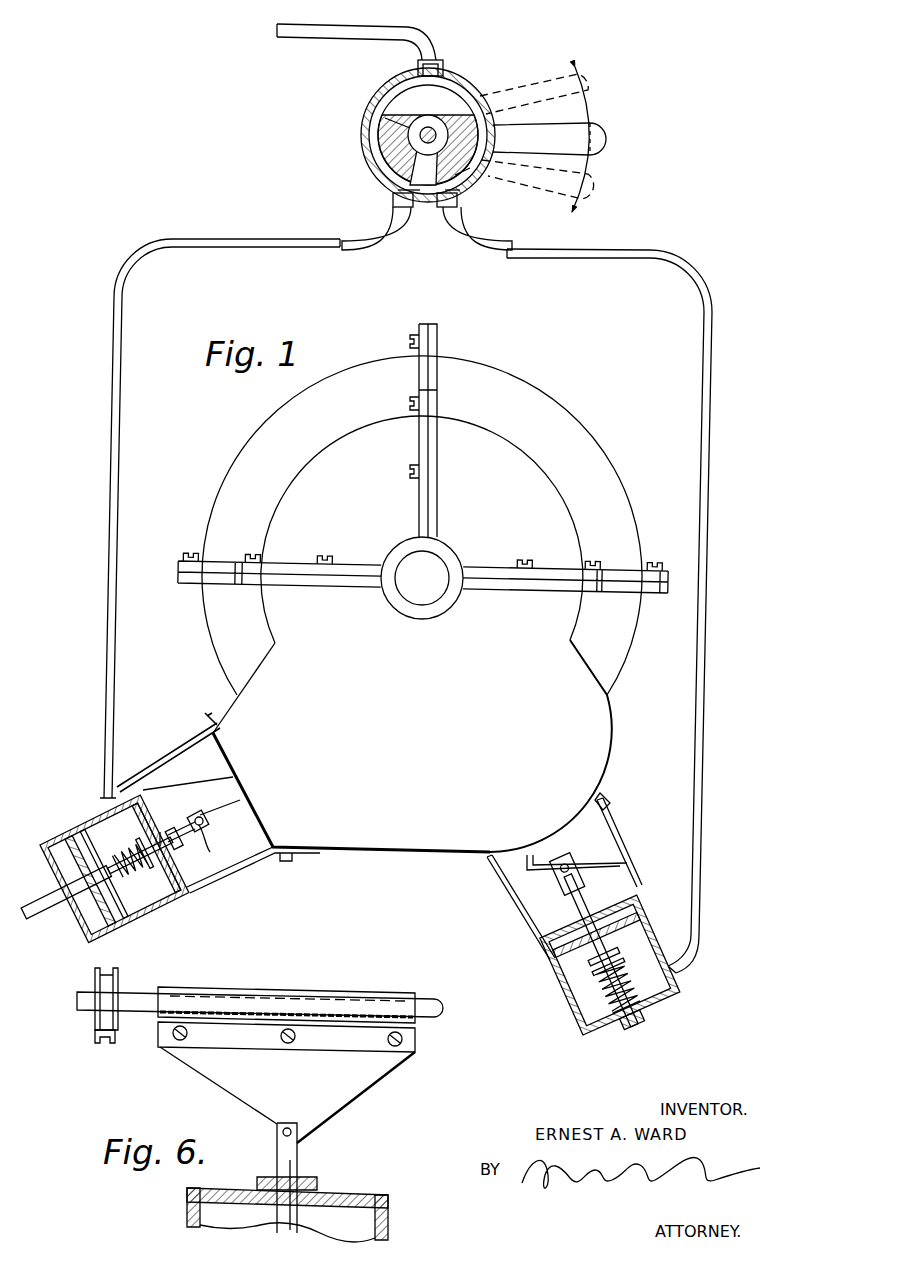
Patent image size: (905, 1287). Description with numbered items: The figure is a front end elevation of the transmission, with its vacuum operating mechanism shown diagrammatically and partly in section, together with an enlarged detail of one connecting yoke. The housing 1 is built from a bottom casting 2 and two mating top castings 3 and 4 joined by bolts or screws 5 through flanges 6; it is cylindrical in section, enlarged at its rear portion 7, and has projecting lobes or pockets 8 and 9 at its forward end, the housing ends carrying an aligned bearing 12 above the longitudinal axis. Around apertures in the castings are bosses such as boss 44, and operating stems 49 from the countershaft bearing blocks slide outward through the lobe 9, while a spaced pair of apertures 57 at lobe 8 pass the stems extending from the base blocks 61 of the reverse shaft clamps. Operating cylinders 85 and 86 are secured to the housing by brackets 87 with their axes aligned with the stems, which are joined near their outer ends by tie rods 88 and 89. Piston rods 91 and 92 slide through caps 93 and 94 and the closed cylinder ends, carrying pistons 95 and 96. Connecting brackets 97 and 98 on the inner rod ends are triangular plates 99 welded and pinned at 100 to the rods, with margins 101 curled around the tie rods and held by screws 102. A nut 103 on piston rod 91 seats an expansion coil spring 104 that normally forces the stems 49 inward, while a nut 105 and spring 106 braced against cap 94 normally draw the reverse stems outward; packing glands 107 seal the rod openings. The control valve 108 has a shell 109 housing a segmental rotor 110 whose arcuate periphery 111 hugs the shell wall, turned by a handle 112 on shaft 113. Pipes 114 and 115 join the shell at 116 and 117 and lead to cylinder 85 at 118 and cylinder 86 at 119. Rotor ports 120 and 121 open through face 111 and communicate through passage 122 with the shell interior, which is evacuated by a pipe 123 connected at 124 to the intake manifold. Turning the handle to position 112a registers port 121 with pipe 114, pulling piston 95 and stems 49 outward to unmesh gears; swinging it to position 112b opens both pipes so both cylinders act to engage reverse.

In FIG. 1, the housing 1 is at (250, 437).
In FIG. 1, the bottom casting 2 is at (448, 726).
In FIG. 1, the top casting 3 is at (375, 512).
In FIG. 1, the top casting 4 is at (525, 514).
In FIG. 1, the bolts or screws 5 is at (411, 400).
In FIG. 1, the flanges 6 is at (424, 352).
In FIG. 1, the diametrically enlarged rear portion 7 is at (540, 416).
In FIG. 1, the lobe or pocket 8 is at (247, 733).
In FIG. 1, the lobe or pocket 9 is at (592, 744).
In FIG. 1, the bearing 12 is at (408, 606).
In FIG. 1, the boss 44 is at (570, 840).
In FIG. 1, the operating stem or rod 49 is at (575, 856).
In FIG. 6, the operating stem or rod 49 is at (120, 976).
In FIG. 1, the aperture 57 is at (225, 787).
In FIG. 1, the base block 61 is at (221, 823).
In FIG. 1, the operating cylinder 85 is at (556, 978).
In FIG. 6, the operating cylinder 85 is at (390, 1217).
In FIG. 1, the operating cylinder 86 is at (147, 913).
In FIG. 1, the brackets 87 is at (198, 750).
In FIG. 1, the tie rod 88 is at (572, 878).
In FIG. 6, the tie rod 88 is at (443, 987).
In FIG. 1, the tie rod 89 is at (203, 835).
In FIG. 1, the piston rod 91 is at (646, 935).
In FIG. 6, the piston rod 91 is at (300, 1147).
In FIG. 1, the piston rod 92 is at (49, 891).
In FIG. 1, the cap 93 is at (620, 893).
In FIG. 6, the cap 93 is at (350, 1190).
In FIG. 1, the cap 94 is at (197, 887).
In FIG. 1, the piston 95 is at (563, 992).
In FIG. 1, the piston 96 is at (105, 903).
In FIG. 1, the connecting bracket 97 is at (560, 882).
In FIG. 6, the connecting bracket 97 is at (373, 1085).
In FIG. 1, the connecting bracket 98 is at (190, 810).
In FIG. 6, the triangular plate 99 is at (306, 1086).
In FIG. 6, the pin 100 is at (281, 1131).
In FIG. 6, the curled margins 101 is at (258, 1004).
In FIG. 6, the screws 102 is at (281, 1036).
In FIG. 1, the nut 103 is at (610, 950).
In FIG. 1, the expansion coil spring 104 is at (610, 985).
In FIG. 1, the nut 105 is at (125, 852).
In FIG. 1, the expansion coil spring 106 is at (148, 856).
In FIG. 1, the packing gland 107 is at (193, 820).
In FIG. 6, the packing gland 107 is at (306, 1181).
In FIG. 1, the control valve 108 is at (467, 137).
In FIG. 1, the shell 109 is at (471, 99).
In FIG. 1, the rotor 110 is at (384, 137).
In FIG. 1, the arcuate periphery 111 is at (380, 172).
In FIG. 1, the handle 112 is at (606, 136).
In FIG. 1, the handle position 112a is at (600, 89).
In FIG. 1, the handle position 112b is at (603, 189).
In FIG. 1, the shaft 113 is at (400, 120).
In FIG. 1, the pipe 114 is at (500, 243).
In FIG. 1, the pipe 115 is at (360, 241).
In FIG. 1, the pipe connection 116 is at (462, 198).
In FIG. 1, the pipe connection 117 is at (395, 192).
In FIG. 1, the pipe connection 118 is at (674, 970).
In FIG. 1, the pipe connection 119 is at (104, 803).
In FIG. 1, the port or passage 120 is at (471, 178).
In FIG. 1, the port or passage 121 is at (420, 208).
In FIG. 1, the passage 122 is at (445, 108).
In FIG. 1, the pipe 123 is at (326, 40).
In FIG. 1, the pipe connection 124 is at (437, 62).